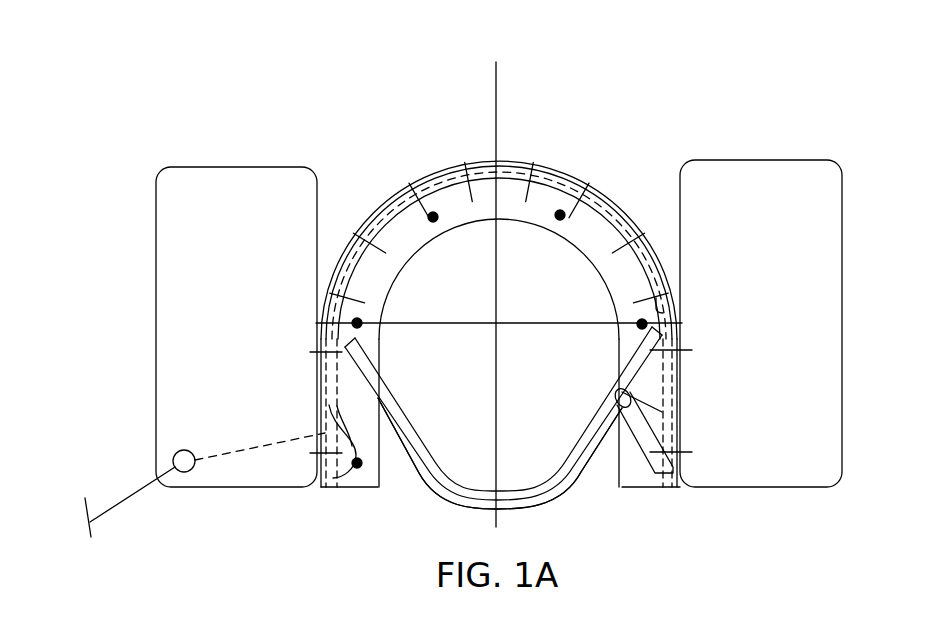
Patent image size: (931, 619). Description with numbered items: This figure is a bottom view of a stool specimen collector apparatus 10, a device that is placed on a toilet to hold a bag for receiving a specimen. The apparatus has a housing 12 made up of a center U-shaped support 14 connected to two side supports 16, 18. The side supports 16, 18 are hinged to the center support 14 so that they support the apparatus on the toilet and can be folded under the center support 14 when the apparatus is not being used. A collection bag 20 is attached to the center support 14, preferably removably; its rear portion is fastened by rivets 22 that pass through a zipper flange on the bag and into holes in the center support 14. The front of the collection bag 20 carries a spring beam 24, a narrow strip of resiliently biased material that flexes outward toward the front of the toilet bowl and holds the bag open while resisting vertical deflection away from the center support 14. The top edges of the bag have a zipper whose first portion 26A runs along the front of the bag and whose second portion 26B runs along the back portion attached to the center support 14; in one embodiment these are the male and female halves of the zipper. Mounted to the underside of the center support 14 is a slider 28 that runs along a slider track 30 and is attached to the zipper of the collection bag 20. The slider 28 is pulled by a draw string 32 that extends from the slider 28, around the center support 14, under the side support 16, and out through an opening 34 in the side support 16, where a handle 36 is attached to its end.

The stool specimen collector apparatus 10 is at (403, 53).
The housing 12 is at (338, 110).
The center U-shaped support 14 is at (418, 180).
The side support 16 is at (193, 167).
The side support 18 is at (742, 160).
The collection bag 20 is at (445, 488).
The rivets 22 is at (433, 222).
The spring beam 24 is at (415, 463).
The first portion of the zipper 26A is at (440, 462).
The second portion of the zipper 26B is at (393, 223).
The slider 28 is at (633, 435).
The slider track 30 is at (683, 456).
The draw string 32 is at (652, 398).
The opening 34 is at (181, 450).
The handle 36 is at (83, 505).